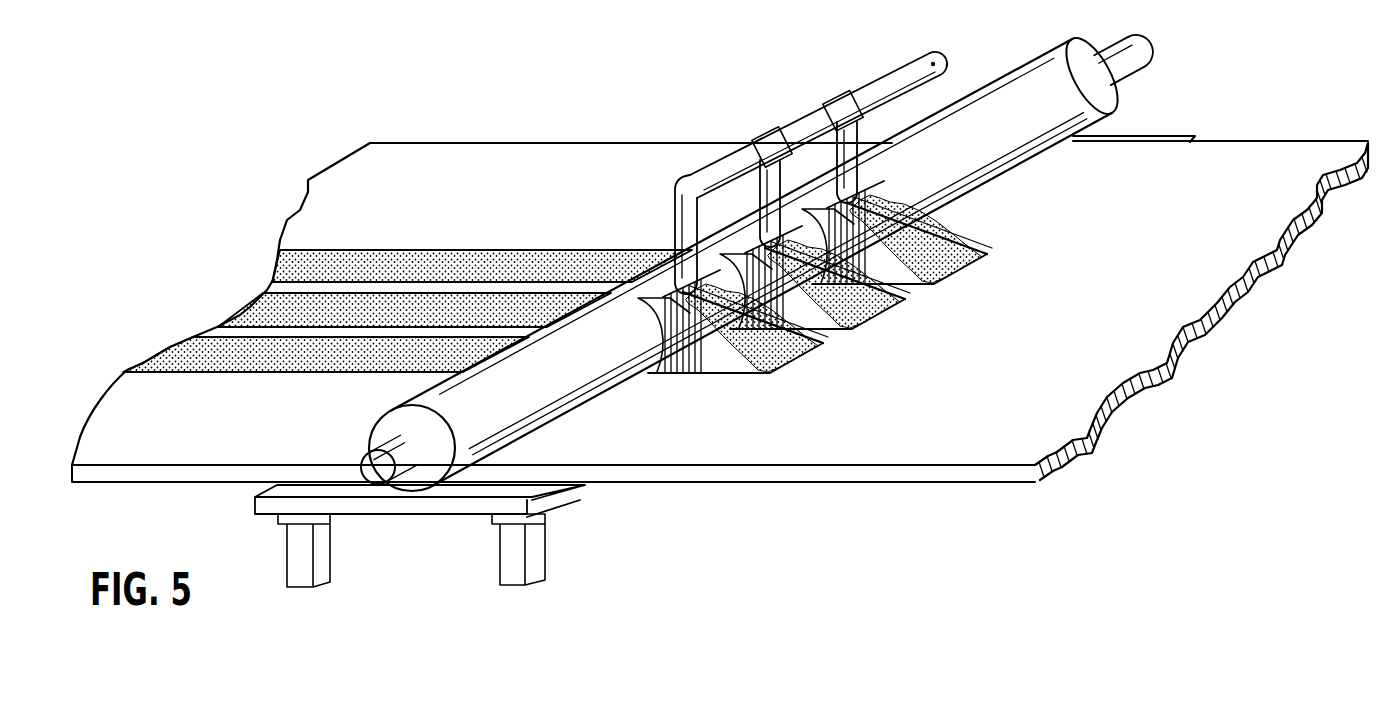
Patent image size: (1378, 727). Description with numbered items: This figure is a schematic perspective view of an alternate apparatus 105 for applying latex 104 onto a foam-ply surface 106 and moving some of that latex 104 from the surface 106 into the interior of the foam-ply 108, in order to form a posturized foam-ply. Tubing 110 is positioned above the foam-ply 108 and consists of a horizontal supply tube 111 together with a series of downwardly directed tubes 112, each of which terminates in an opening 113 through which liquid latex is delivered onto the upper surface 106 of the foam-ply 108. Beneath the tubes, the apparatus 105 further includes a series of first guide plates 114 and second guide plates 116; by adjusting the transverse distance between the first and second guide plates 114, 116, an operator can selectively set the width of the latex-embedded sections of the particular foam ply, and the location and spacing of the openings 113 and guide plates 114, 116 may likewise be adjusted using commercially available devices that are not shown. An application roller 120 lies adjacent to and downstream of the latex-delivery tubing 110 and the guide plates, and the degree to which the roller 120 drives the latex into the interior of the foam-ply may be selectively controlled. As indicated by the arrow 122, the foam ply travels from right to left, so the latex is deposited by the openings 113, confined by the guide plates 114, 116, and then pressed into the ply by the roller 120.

The latex 104 is at (960, 250).
The alternate apparatus 105 is at (757, 254).
The foam-ply surface 106 is at (778, 455).
The foam-ply 108 is at (1063, 472).
The tubing 110 is at (800, 116).
The horizontal supply tube 111 is at (928, 63).
The downwardly directed tubes 112 is at (674, 248).
The openings 113 is at (660, 328).
The first guide plates 114 is at (737, 370).
The second guide plates 116 is at (808, 341).
The application roller 120 is at (556, 400).
The arrow 122 is at (942, 512).